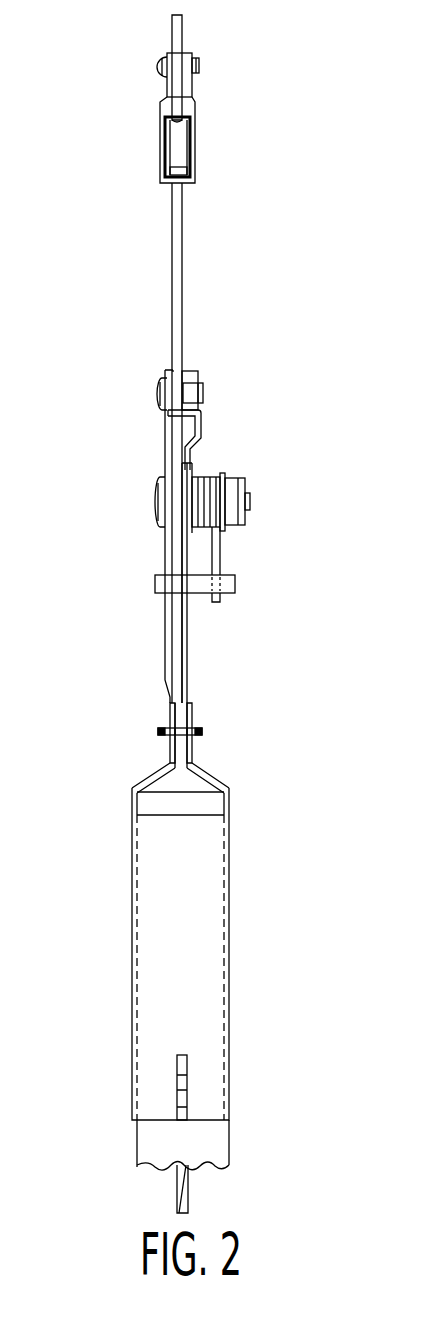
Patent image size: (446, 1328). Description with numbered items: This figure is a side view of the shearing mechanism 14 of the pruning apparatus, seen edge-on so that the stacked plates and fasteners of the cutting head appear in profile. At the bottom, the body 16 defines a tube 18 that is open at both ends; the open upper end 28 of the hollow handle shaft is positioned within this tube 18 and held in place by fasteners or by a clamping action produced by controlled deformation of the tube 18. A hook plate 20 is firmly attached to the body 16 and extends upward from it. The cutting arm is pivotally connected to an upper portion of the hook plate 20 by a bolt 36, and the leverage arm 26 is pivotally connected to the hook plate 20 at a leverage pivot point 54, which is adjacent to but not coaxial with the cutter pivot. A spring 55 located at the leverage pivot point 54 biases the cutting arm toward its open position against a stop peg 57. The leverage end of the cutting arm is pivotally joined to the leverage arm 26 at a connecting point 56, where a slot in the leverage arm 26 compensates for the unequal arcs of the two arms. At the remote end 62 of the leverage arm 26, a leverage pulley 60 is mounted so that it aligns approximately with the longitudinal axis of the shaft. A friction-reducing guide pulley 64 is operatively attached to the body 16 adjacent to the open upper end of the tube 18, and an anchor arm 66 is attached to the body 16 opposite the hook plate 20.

The shearing mechanism 14 is at (213, 362).
The body 16 is at (232, 1112).
The tube 18 is at (213, 868).
The hook plate 20 is at (183, 623).
The leverage arm 26 is at (182, 278).
The open upper end 28 is at (210, 785).
The bolt 36 is at (245, 483).
The leverage pivot point 54 is at (147, 495).
The spring 55 is at (208, 477).
The connecting point 56 is at (150, 393).
The stop peg 57 is at (155, 583).
The leverage pulley 60 is at (177, 155).
The remote end 62 is at (182, 30).
The guide pulley 64 is at (182, 723).
The anchor arm 66 is at (187, 1068).